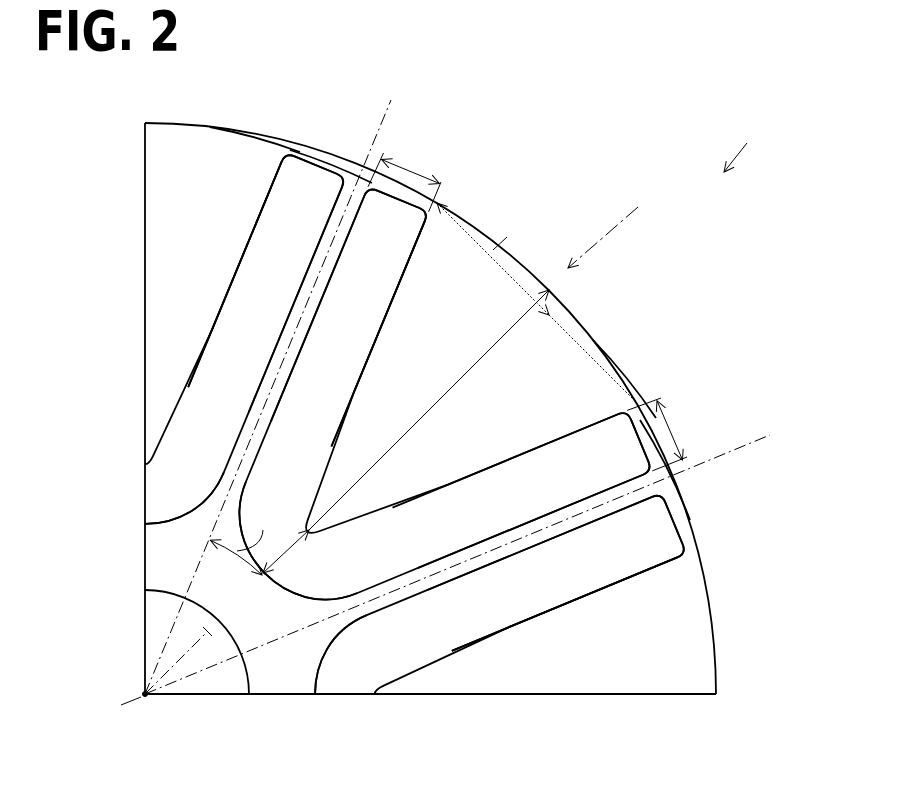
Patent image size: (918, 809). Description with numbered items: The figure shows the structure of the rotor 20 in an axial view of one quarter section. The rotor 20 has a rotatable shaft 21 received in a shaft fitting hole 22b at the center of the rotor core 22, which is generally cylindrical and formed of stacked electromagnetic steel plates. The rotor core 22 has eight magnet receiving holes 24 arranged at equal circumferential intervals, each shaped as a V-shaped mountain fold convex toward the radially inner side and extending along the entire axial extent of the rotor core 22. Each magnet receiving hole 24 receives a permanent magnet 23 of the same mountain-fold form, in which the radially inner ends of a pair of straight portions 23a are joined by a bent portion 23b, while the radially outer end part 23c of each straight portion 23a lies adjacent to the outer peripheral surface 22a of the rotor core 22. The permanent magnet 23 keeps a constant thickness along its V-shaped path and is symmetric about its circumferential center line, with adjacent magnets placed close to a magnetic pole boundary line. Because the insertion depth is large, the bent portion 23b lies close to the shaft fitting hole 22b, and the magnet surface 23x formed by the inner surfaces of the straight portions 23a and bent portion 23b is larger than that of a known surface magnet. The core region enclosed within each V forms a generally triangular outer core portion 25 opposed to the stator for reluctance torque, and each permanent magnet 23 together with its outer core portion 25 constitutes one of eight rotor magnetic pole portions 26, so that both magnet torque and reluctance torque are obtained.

The rotor 20 is at (440, 400).
The rotatable shaft 21 is at (433, 408).
The rotor core 22 is at (433, 408).
The outer peripheral surface 22a is at (716, 643).
The shaft fitting hole 22b is at (155, 600).
The permanent magnet 23 is at (434, 406).
The straight portion 23a is at (279, 167).
The bent portion 23b is at (362, 514).
The radially outer end part 23c is at (318, 150).
The magnet surface 23x is at (261, 211).
The magnet receiving hole 24 is at (218, 316).
The outer core portion 25 is at (180, 128).
The rotor magnetic pole portion 26 is at (223, 128).